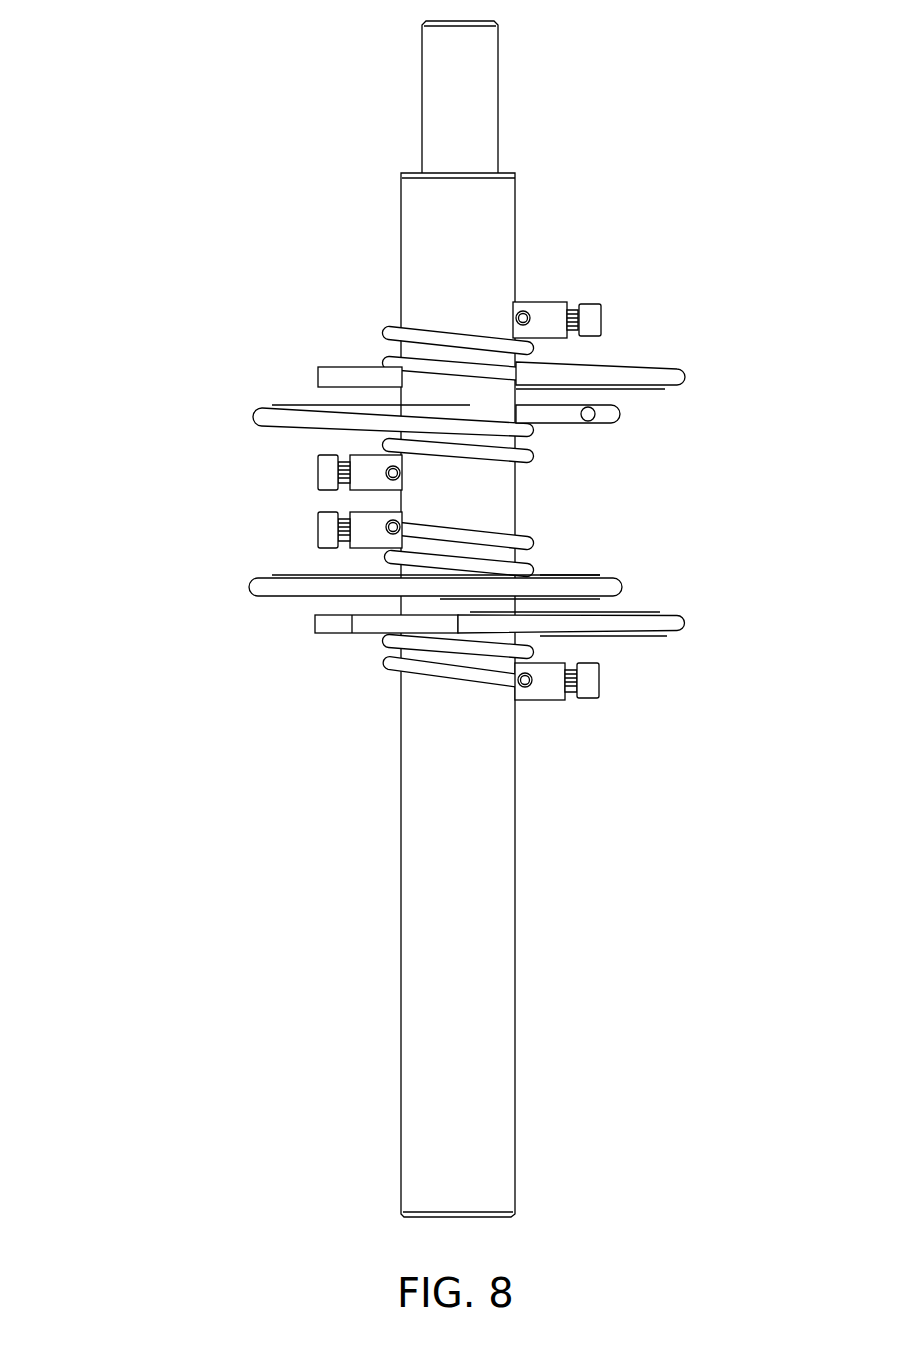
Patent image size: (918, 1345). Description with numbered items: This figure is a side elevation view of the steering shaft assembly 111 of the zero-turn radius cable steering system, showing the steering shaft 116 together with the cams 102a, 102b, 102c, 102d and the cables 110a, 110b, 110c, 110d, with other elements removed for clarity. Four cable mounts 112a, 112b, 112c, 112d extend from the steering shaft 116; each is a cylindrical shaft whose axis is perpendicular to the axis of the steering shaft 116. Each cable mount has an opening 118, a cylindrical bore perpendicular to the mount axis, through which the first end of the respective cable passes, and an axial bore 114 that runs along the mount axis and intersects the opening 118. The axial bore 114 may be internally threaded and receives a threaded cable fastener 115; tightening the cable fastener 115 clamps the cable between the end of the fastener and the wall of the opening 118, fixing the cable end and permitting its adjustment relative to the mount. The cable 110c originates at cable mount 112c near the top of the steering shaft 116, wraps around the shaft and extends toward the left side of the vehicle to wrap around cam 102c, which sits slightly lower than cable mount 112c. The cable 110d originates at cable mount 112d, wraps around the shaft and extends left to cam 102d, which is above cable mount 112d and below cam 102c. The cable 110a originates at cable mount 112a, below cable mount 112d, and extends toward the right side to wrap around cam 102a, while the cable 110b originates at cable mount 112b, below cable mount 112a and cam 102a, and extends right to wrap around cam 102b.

The steering shaft assembly 111 is at (150, 186).
The steering shaft 116 is at (477, 250).
The cable 110a is at (258, 587).
The cable 110b is at (686, 622).
The cable 110c is at (687, 375).
The cable 110d is at (260, 414).
The cam 102a is at (567, 578).
The cam 102b is at (315, 622).
The cam 102c is at (318, 380).
The cam 102d is at (565, 427).
The cable mount 112a is at (350, 565).
The cable mount 112b is at (562, 700).
The cable mount 112c is at (586, 309).
The cable mount 112d is at (365, 455).
The axial bore 114 is at (572, 336).
The threaded cable fastener 115 is at (602, 320).
The opening 118 is at (541, 302).